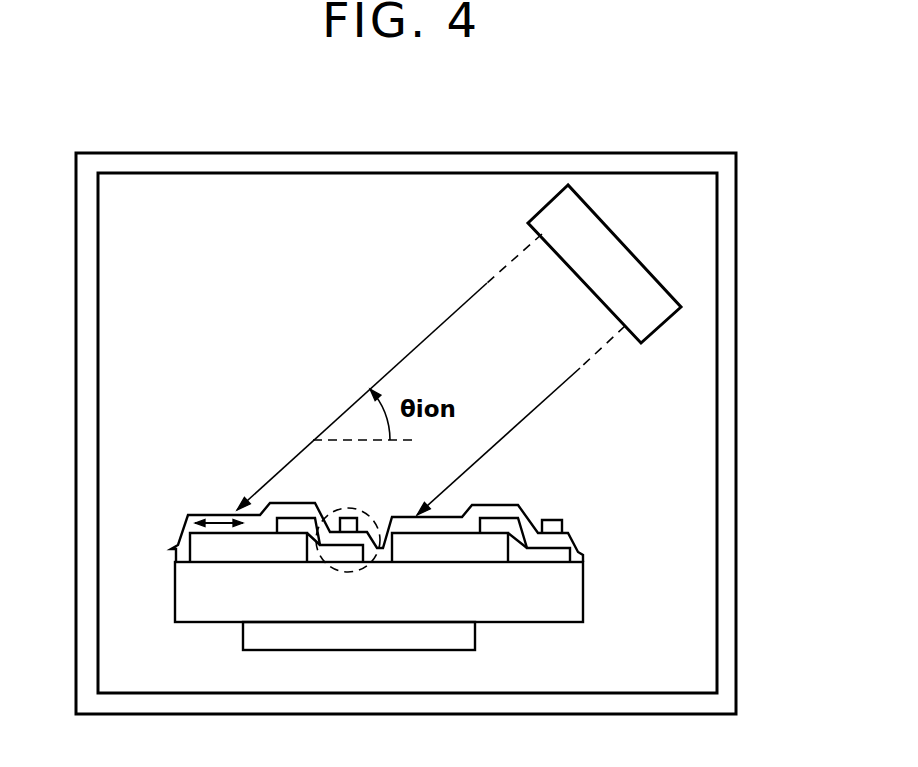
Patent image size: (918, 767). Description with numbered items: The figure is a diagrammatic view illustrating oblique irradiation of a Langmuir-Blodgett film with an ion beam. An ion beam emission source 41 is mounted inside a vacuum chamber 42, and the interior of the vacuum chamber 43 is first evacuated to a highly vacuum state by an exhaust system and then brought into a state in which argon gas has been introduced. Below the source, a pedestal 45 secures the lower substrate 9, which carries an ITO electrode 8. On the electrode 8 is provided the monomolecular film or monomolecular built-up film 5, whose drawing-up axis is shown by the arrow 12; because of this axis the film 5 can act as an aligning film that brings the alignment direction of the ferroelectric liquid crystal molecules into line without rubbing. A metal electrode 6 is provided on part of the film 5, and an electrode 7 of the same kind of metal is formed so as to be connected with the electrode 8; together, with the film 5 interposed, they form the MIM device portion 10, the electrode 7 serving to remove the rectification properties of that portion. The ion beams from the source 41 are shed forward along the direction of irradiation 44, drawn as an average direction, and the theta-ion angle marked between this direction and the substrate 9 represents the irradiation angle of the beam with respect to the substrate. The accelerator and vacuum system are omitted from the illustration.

The monomolecular film or monomolecular built-up film 5 is at (518, 507).
The metal electrode 6 is at (563, 523).
The electrode 7 is at (570, 548).
The ITO electrode 8 is at (198, 548).
The lower substrate 9 is at (197, 593).
The MIM device portion 10 is at (320, 572).
The arrow indicating drawing-up axis 12 is at (217, 523).
The ion beam emission source 41 is at (662, 302).
The vacuum chamber 42 is at (728, 400).
The interior of the vacuum chamber 43 is at (703, 588).
The direction of irradiation 44 is at (447, 320).
The pedestal 45 is at (468, 635).